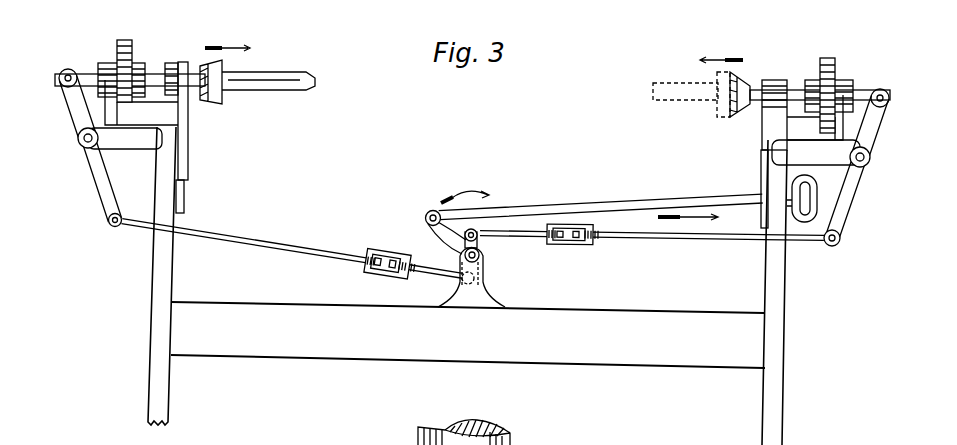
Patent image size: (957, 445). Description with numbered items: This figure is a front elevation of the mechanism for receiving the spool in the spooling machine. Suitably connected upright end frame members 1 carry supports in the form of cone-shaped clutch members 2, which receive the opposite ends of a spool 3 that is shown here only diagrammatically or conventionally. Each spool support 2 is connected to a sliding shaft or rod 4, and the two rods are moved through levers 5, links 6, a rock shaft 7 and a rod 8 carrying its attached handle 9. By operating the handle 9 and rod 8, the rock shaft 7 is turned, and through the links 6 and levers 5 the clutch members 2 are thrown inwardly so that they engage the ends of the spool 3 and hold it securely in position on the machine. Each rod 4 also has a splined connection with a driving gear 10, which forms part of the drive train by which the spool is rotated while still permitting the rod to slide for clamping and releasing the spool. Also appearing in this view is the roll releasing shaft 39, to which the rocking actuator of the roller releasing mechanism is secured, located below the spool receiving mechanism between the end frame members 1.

The upright end frame member 1 is at (163, 312).
The cone-shaped clutch member 2 is at (207, 68).
The spool 3 is at (283, 89).
The sliding shaft or rod 4 is at (92, 78).
The lever 5 is at (80, 116).
The link 6 is at (227, 238).
The rock shaft 7 is at (474, 256).
The rod 8 is at (550, 207).
The handle 9 is at (817, 203).
The driving gear 10 is at (125, 43).
The roll releasing shaft 39 is at (510, 444).